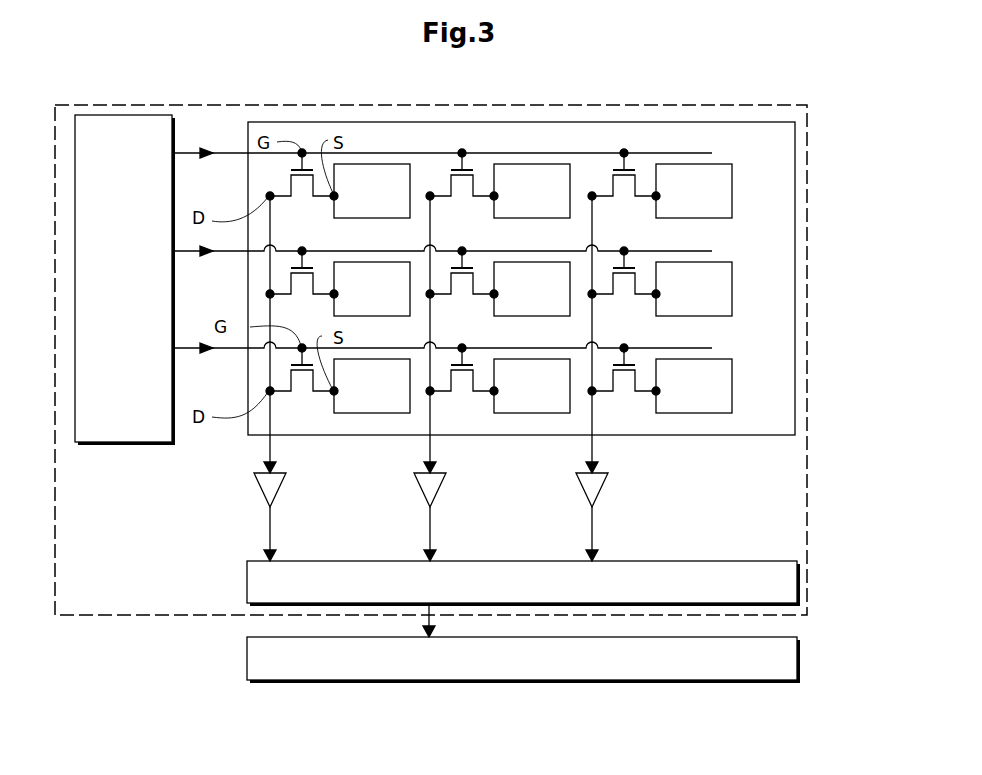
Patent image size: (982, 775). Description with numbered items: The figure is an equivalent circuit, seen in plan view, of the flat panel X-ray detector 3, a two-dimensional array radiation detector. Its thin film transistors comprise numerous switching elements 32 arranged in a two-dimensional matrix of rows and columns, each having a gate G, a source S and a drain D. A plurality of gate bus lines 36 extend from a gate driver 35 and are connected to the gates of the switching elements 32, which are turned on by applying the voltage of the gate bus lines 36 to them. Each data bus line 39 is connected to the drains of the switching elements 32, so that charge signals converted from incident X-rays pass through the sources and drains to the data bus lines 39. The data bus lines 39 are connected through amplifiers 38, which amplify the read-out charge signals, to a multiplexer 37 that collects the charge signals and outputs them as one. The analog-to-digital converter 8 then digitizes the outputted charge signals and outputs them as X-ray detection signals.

The flat panel X-ray detector 3 is at (72, 133).
The switching element 32 is at (307, 134).
The gate driver 35 is at (115, 445).
The gate bus line 36 is at (237, 157).
The multiplexer 37 is at (247, 583).
The amplifier 38 is at (270, 485).
The data bus line 39 is at (268, 452).
The analog-to-digital converter 8 is at (247, 657).